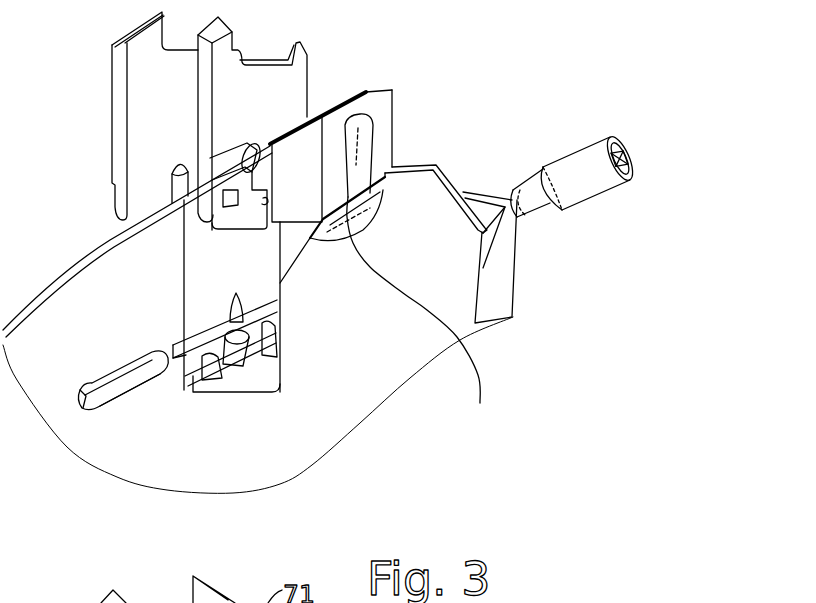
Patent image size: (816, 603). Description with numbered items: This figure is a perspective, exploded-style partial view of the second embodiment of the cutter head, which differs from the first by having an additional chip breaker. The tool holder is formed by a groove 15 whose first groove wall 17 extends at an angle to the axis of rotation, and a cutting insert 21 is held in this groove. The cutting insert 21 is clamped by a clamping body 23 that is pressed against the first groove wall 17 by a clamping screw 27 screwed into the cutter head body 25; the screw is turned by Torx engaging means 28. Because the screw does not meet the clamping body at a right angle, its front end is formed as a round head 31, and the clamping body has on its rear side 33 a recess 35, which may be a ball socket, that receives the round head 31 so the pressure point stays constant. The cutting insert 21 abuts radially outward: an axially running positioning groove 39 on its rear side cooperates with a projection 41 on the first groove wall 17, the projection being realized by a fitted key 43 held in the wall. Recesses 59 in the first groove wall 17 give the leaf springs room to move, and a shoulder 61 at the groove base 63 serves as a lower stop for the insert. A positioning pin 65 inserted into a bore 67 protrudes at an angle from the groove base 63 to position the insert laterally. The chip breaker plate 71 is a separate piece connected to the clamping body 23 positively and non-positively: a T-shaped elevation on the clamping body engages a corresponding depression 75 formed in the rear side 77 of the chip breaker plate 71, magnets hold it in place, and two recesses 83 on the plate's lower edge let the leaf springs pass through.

The groove 15 is at (168, 322).
The first groove wall 17 is at (197, 280).
The cutting insert 21 is at (111, 93).
The clamping body 23 is at (395, 113).
The cutter head body 25 is at (370, 353).
The clamping screw 27 is at (588, 190).
The engaging means 28 is at (633, 157).
The round head 31 is at (518, 215).
The rear side 33 is at (422, 318).
The recess 35 is at (362, 150).
The positioning groove 39 is at (113, 185).
The projection 41 is at (82, 405).
The fitted key 43 is at (110, 402).
The recesses 59 is at (212, 390).
The shoulder 61 is at (190, 383).
The groove base 63 is at (263, 390).
The positioning pin 65 is at (232, 390).
The bore 67 is at (250, 390).
The chip breaker plate 71 is at (282, 143).
The depression 75 is at (110, 205).
The rear side 77 is at (280, 87).
The recesses 83 is at (185, 218).